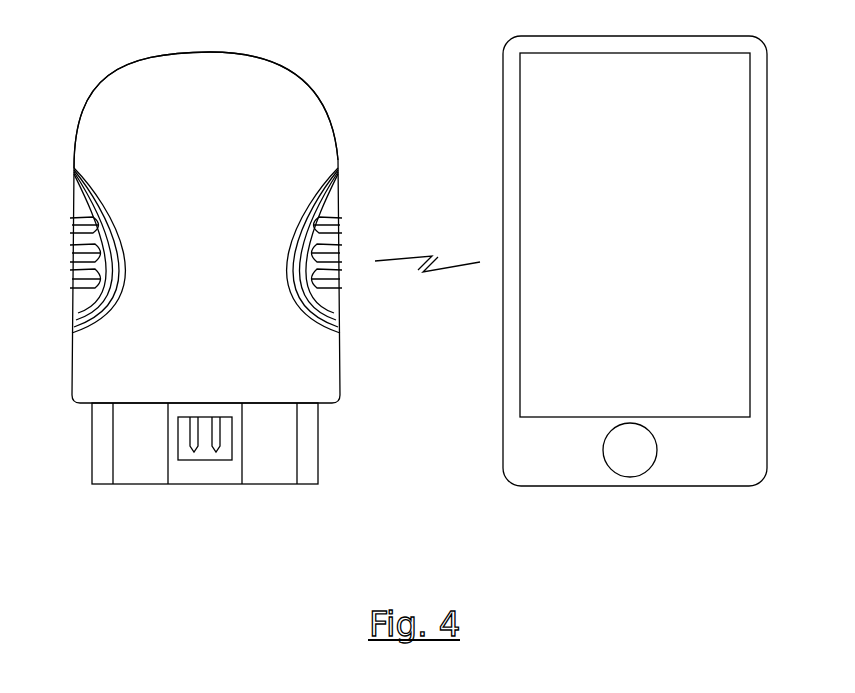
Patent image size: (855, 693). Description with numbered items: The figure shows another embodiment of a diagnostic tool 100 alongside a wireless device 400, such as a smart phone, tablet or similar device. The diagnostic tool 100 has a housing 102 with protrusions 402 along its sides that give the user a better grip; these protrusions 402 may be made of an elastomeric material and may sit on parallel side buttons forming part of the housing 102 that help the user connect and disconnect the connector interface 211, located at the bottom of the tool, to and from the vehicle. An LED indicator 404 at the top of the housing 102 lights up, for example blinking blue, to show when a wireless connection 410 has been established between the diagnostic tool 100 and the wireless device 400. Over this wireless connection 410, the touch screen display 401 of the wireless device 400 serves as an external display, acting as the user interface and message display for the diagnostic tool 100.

The diagnostic tool 100 is at (196, 255).
The housing 102 is at (79, 119).
The LED indicator 404 is at (210, 53).
The protrusions 402 is at (70, 225).
The connector interface 211 is at (92, 460).
The wireless connection 410 is at (427, 247).
The wireless device 400 is at (660, 261).
The touch screen display 401 is at (712, 110).